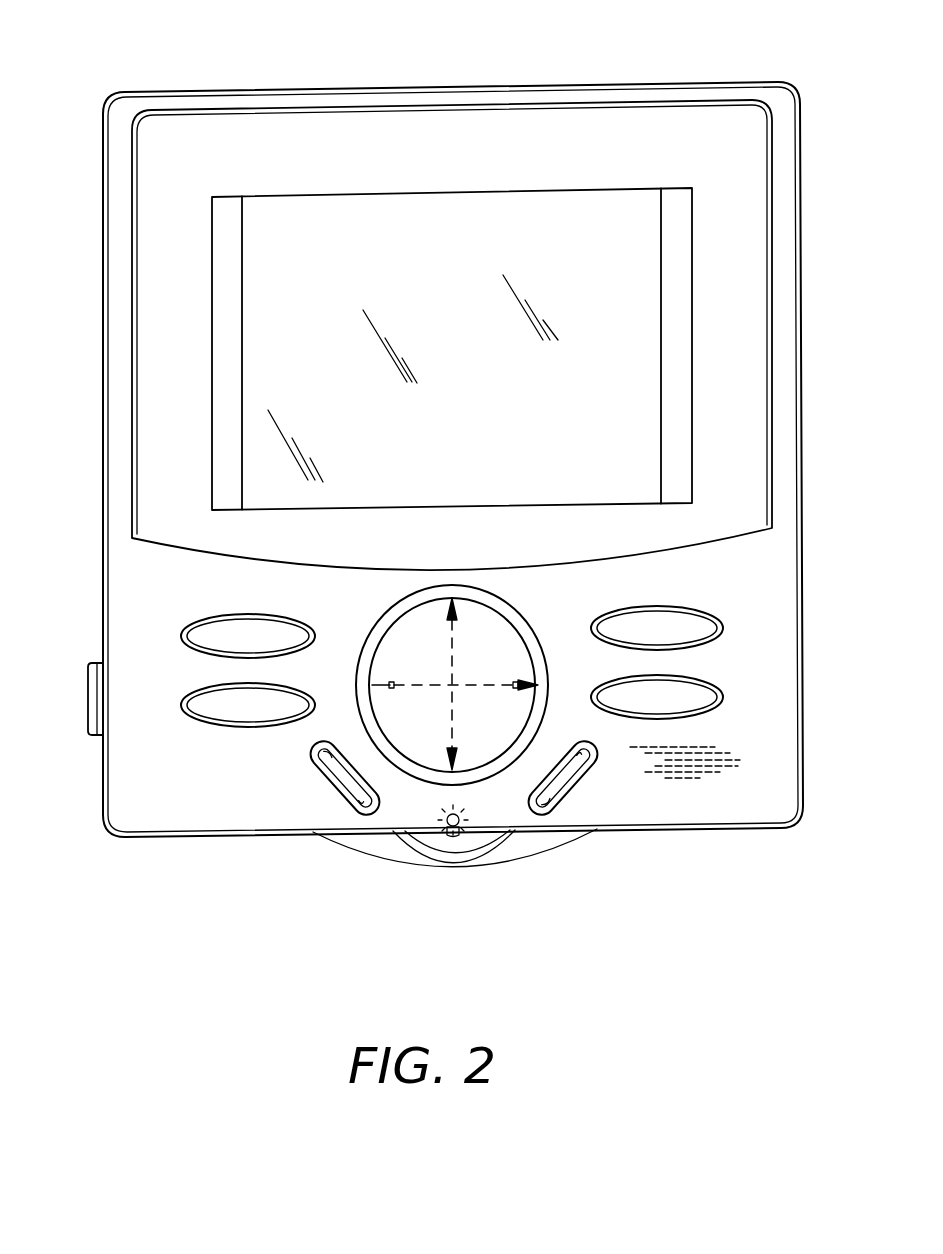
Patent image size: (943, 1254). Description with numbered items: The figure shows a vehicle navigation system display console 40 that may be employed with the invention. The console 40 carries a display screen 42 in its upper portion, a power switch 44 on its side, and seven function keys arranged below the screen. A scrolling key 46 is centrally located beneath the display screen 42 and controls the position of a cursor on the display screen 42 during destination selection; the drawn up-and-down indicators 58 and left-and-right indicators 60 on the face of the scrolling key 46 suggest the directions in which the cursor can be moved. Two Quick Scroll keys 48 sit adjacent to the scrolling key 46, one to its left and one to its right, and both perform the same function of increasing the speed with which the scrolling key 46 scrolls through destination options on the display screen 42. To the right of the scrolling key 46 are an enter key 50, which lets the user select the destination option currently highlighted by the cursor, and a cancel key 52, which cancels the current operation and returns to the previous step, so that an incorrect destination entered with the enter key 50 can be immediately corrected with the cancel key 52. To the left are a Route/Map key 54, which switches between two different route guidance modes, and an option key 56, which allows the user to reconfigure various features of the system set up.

The vehicle navigation system display console 40 is at (718, 82).
The display screen 42 is at (525, 459).
The power switch 44 is at (88, 697).
The scrolling key 46 is at (519, 619).
The Quick Scroll keys 48 is at (340, 785).
The enter key 50 is at (710, 698).
The cancel key 52 is at (712, 627).
The Route/Map key 54 is at (200, 633).
The option key 56 is at (200, 702).
The up/down arrows 58 is at (457, 613).
The left/right arrows 60 is at (391, 681).